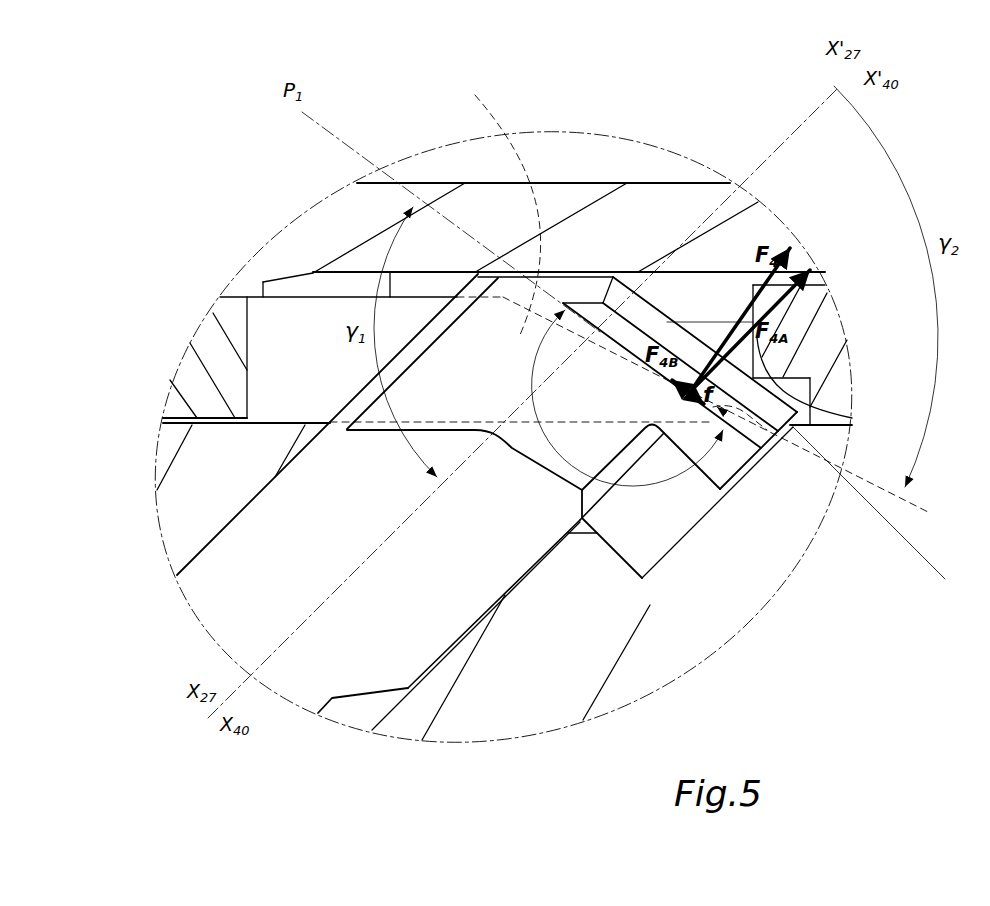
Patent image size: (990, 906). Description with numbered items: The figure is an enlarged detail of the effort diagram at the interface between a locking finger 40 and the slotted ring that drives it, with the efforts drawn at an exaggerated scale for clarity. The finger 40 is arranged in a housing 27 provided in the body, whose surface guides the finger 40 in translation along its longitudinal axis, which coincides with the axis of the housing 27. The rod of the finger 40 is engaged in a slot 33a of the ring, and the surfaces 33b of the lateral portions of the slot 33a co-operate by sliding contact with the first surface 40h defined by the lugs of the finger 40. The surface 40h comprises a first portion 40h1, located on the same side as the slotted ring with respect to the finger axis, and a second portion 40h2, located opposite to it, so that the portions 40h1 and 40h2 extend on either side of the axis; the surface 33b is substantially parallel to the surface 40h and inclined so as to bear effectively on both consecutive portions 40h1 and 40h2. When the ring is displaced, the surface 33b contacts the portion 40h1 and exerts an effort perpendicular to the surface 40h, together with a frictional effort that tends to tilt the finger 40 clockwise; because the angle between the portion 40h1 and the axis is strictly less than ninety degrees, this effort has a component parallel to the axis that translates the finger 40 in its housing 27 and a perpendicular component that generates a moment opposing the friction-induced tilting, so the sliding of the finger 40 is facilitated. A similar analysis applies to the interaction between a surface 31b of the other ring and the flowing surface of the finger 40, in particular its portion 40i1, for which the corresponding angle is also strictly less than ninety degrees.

The housing 27 is at (473, 632).
The finger 40 is at (458, 375).
The portion of the surface 40i 40i1 is at (653, 303).
The first surface 40h is at (761, 533).
The first portion of the surface 40h 40h1 is at (640, 505).
The second portion of the surface 40h 40h2 is at (730, 442).
The surface 31b is at (853, 422).
The slot 33a is at (490, 205).
The surface 33b is at (736, 414).